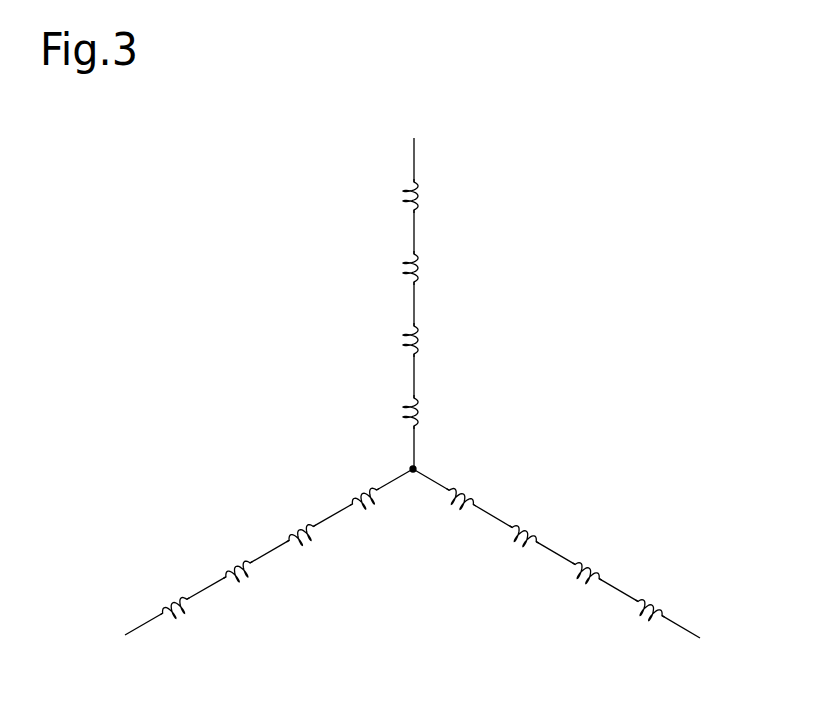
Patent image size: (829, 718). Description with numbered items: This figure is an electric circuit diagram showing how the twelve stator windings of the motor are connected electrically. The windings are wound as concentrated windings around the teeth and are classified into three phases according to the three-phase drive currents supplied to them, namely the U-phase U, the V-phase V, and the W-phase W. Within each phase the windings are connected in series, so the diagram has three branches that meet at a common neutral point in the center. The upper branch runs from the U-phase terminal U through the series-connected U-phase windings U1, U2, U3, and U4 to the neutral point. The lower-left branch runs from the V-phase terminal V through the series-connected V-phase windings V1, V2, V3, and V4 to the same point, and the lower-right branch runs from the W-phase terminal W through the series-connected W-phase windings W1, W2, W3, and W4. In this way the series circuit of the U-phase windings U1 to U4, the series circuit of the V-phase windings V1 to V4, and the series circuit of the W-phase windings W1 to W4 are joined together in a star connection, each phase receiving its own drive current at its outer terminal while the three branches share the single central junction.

The U-phase U is at (412, 144).
The V-phase V is at (132, 634).
The W-phase W is at (693, 636).
The U-phase winding U1 is at (419, 183).
The U-phase winding U2 is at (419, 255).
The U-phase winding U3 is at (419, 327).
The U-phase winding U4 is at (419, 399).
The V-phase winding V1 is at (169, 596).
The V-phase winding V2 is at (232, 560).
The V-phase winding V3 is at (295, 523).
The V-phase winding V4 is at (358, 487).
The W-phase winding W1 is at (656, 598).
The W-phase winding W2 is at (593, 561).
The W-phase winding W3 is at (530, 524).
The W-phase winding W4 is at (467, 487).